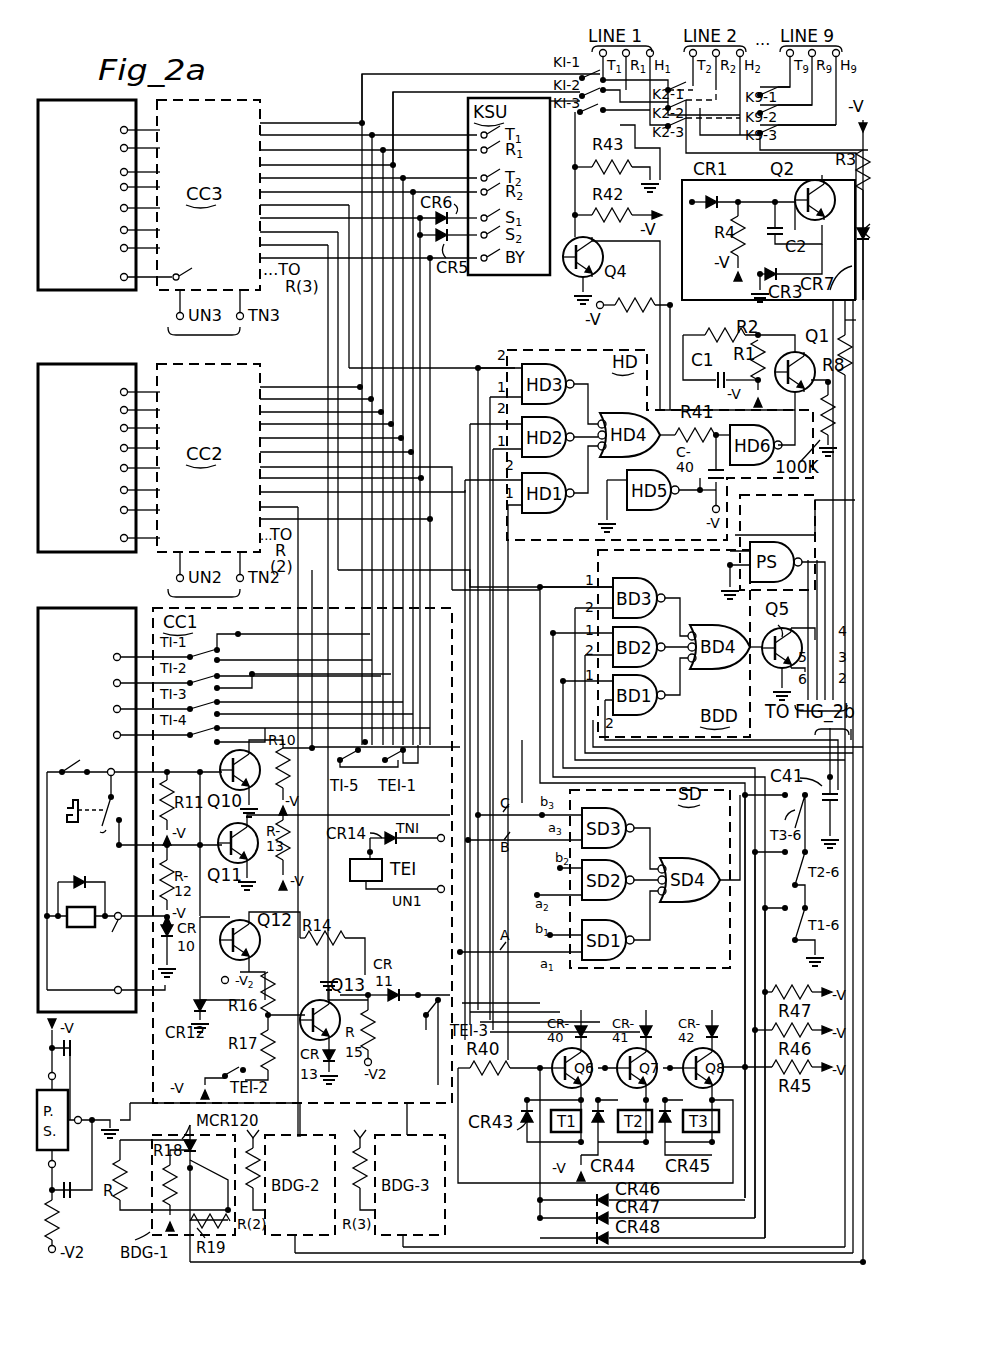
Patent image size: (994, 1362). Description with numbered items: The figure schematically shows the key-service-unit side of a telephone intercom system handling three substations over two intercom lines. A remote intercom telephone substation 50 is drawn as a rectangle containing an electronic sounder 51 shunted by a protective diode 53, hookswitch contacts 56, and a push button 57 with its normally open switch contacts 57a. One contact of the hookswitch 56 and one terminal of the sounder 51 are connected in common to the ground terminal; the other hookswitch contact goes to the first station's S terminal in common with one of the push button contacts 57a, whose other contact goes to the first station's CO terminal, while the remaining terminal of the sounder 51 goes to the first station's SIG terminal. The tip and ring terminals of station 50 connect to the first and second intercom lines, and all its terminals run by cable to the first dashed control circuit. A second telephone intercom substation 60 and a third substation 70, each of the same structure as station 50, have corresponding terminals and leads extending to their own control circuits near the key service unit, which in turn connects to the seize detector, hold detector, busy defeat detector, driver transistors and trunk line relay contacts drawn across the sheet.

The third telephone intercom substation 70 is at (80, 101).
The second telephone intercom substation 60 is at (80, 365).
The remote intercom telephone substation 50 is at (80, 609).
The hookswitch contacts 56 is at (74, 766).
The push button 57 is at (74, 805).
The normally open switch contacts 57a is at (112, 826).
The protective diode 53 is at (84, 872).
The sounder 51 is at (81, 928).